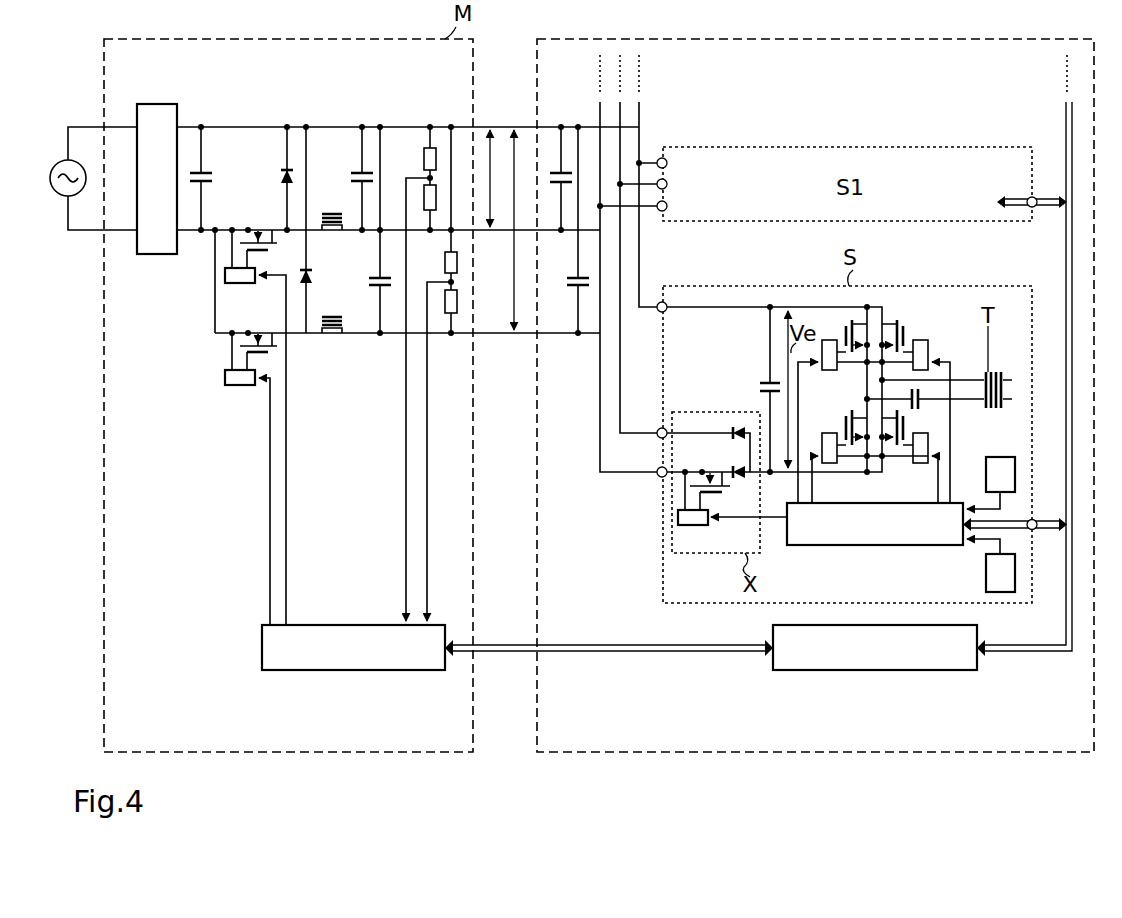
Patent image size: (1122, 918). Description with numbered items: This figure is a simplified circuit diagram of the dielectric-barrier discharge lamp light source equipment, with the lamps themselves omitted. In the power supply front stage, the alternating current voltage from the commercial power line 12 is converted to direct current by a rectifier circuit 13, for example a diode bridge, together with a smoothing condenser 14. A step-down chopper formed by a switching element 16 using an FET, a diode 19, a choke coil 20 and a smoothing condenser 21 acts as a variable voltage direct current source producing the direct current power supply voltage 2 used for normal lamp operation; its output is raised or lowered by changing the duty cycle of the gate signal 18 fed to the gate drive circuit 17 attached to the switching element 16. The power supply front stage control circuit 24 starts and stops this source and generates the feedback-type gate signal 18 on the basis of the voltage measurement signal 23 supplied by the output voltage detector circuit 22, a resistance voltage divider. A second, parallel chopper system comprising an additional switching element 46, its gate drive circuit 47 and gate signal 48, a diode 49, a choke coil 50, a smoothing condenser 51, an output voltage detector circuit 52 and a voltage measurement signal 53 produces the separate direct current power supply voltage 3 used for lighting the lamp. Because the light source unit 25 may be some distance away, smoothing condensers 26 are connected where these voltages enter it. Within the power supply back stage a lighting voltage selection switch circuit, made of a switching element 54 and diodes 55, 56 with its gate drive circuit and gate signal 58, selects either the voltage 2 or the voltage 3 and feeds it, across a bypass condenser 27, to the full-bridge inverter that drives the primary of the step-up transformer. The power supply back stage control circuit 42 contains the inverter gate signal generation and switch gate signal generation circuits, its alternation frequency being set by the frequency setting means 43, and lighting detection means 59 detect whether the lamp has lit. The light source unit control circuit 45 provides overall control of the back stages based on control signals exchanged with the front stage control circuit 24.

The direct current power supply voltage for normal lamp operation 2 is at (481, 178).
The direct current power supply voltage for lighting the lamp 3 is at (506, 230).
The commercial power line 12 is at (86, 178).
The rectifier circuit 13 is at (146, 191).
The smoothing condenser 14 is at (209, 178).
The switching element 16 is at (254, 236).
The gate drive circuit 17 is at (240, 289).
The gate signal 18 is at (285, 450).
The diode 19 is at (273, 178).
The choke coil 20 is at (332, 235).
The smoothing condenser 21 is at (352, 178).
The output voltage detector circuit 22 is at (429, 178).
The voltage measurement signal 23 is at (403, 399).
The power supply front stage control circuit 24 is at (333, 661).
The light source unit 25 is at (566, 39).
The smoothing condenser 26 is at (563, 230).
The bypass condenser 27 is at (759, 389).
The power supply back stage control circuit 42 is at (865, 535).
The frequency setting means 43 is at (989, 586).
The light source unit control circuit 45 is at (865, 661).
The switching transistor 46 is at (254, 340).
The gate drive circuit 47 is at (241, 390).
The gate signal 48 is at (255, 501).
The diode 49 is at (318, 230).
The choke coil 50 is at (332, 338).
The smoothing condenser 51 is at (528, 337).
The output voltage detector circuit 52 is at (450, 281).
The measuring line 53 is at (441, 451).
The switching element 54 is at (707, 479).
The diode 55 is at (745, 485).
The diode 56 is at (737, 427).
The gate signal 58 is at (749, 531).
The lighting detection means 59 is at (989, 488).